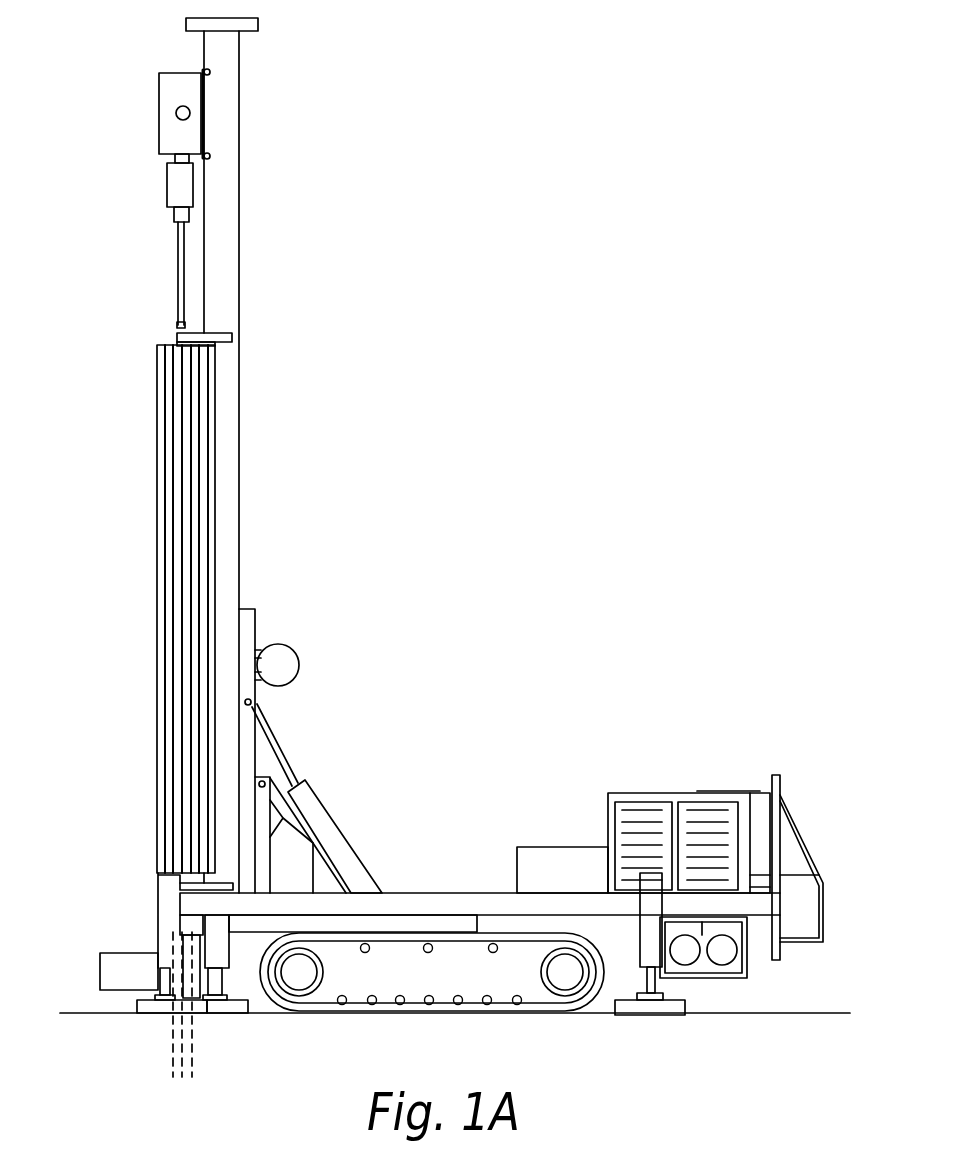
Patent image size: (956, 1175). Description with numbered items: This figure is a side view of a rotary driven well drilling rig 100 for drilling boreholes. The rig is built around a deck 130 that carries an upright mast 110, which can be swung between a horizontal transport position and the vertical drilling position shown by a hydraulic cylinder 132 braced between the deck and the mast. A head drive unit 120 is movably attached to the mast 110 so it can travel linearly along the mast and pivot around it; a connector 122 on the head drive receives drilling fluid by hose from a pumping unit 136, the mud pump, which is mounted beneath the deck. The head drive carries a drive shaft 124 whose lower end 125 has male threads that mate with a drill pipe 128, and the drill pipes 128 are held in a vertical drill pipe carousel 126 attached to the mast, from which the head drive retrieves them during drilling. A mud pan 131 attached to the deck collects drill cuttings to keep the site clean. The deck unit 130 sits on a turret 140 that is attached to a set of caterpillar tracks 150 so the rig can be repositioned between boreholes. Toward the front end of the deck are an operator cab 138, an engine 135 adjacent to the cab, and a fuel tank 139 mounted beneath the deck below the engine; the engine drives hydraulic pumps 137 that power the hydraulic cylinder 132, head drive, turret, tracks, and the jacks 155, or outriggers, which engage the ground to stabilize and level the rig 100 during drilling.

The rotary driven well drilling rig 100 is at (590, 202).
The mast 110 is at (240, 67).
The head drive unit 120 is at (123, 132).
The connector 122 is at (176, 114).
The drive shaft 124 is at (176, 268).
The lower end 125 is at (176, 325).
The drill pipe carousel 126 is at (133, 362).
The drill pipes 128 is at (156, 618).
The deck 130 is at (440, 894).
The mud pan 131 is at (115, 953).
The hydraulic cylinder 132 is at (314, 803).
The engine 135 is at (647, 805).
The pumping unit 136 is at (736, 974).
The hydraulic pumps 137 is at (553, 850).
The operator cab 138 is at (795, 834).
The fuel tank 139 is at (780, 958).
The turret 140 is at (467, 927).
The tracks 150 is at (300, 988).
The jacks 155 is at (660, 993).